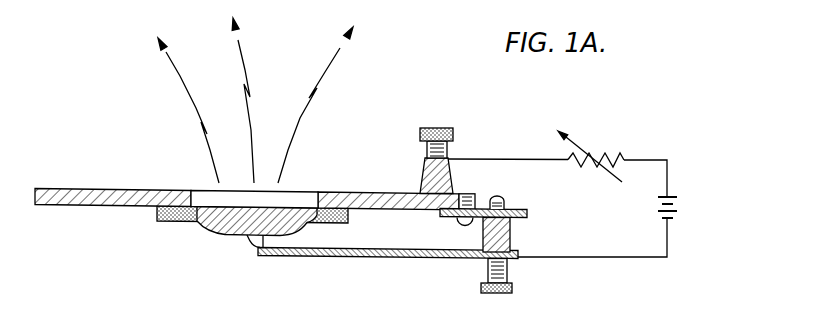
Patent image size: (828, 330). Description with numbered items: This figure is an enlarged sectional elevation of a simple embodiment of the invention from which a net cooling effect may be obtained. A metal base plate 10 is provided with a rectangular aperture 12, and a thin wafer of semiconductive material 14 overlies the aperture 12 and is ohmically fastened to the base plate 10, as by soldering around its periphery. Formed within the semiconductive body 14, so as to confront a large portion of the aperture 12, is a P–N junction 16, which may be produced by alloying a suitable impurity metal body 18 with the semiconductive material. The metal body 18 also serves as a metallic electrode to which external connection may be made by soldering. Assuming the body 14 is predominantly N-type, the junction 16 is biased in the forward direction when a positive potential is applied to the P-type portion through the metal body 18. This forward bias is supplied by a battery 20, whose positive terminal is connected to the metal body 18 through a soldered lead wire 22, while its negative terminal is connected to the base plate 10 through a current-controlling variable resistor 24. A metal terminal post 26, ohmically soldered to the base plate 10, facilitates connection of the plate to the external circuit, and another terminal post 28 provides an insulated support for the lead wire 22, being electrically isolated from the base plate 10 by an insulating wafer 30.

The metal base plate 10 is at (61, 188).
The rectangular aperture 12 is at (197, 190).
The wafer of semiconductive material 14 is at (158, 222).
The P–N junction 16 is at (208, 235).
The impurity metal body 18 is at (293, 228).
The battery 20 is at (710, 218).
The lead wire 22 is at (402, 259).
The variable resistor 24 is at (626, 138).
The metal terminal post 26 is at (424, 175).
The terminal post 28 is at (511, 230).
The insulating wafer 30 is at (528, 214).